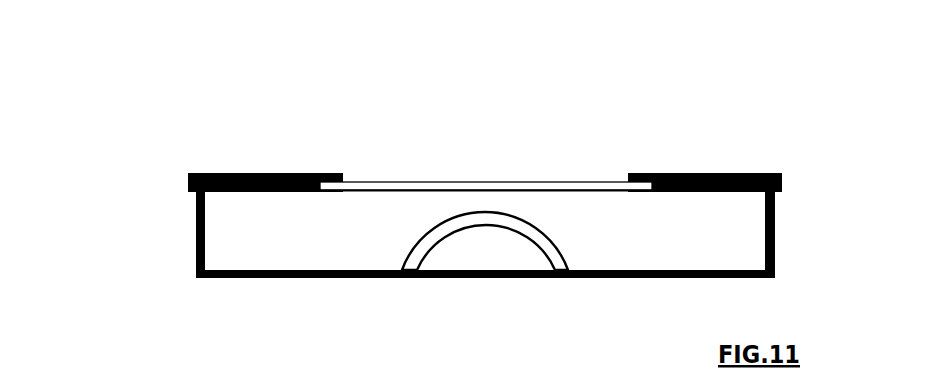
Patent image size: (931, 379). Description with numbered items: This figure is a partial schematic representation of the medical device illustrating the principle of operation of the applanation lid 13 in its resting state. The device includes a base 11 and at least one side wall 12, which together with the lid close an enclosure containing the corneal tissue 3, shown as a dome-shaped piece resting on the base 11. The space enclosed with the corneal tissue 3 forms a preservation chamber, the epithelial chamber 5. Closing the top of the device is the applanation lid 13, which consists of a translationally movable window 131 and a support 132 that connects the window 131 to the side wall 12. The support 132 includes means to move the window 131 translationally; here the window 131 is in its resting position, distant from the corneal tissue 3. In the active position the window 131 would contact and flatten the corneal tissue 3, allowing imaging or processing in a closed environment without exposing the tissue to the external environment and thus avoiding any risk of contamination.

The corneal tissue 3 is at (423, 243).
The epithelial chamber 5 is at (602, 241).
The base 11 is at (278, 268).
The side wall 12 is at (197, 241).
The applanation lid 13 is at (485, 101).
The window 131 is at (460, 181).
The support 132 is at (697, 177).